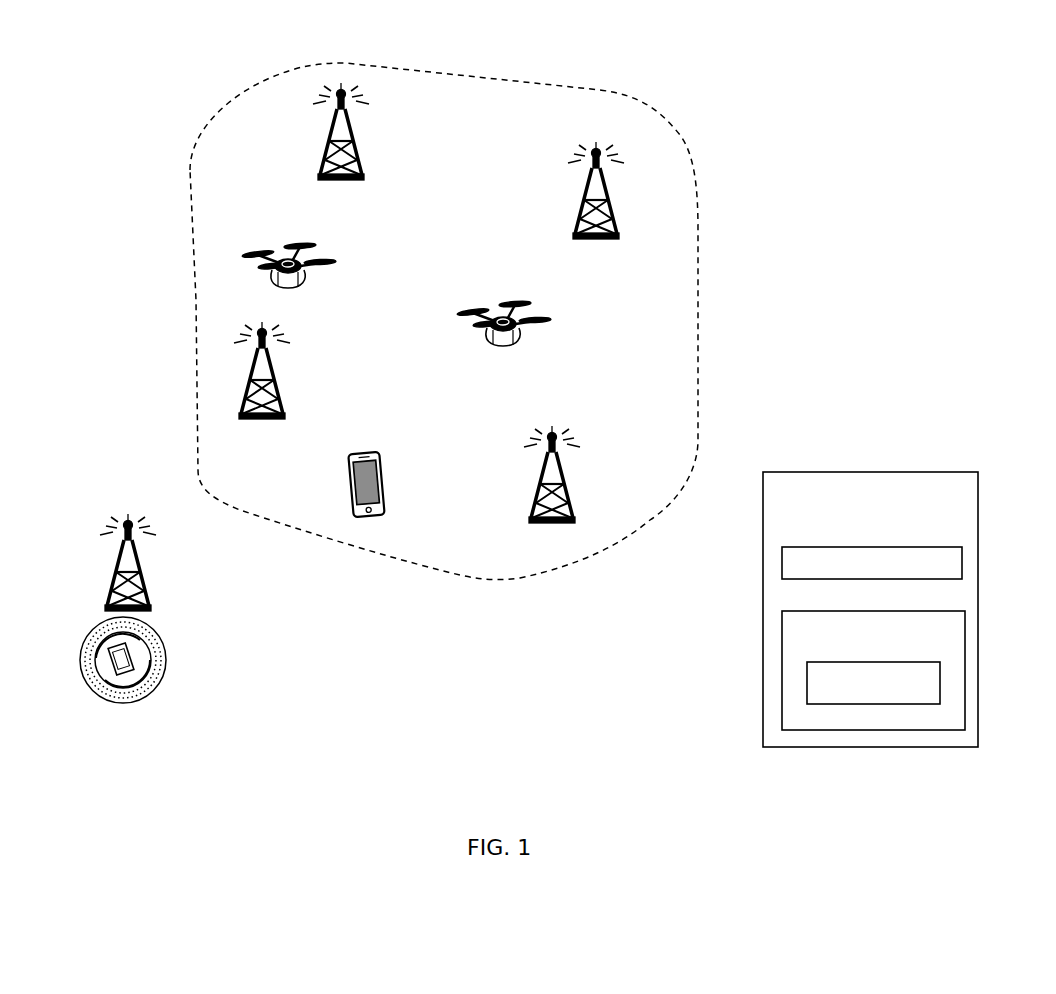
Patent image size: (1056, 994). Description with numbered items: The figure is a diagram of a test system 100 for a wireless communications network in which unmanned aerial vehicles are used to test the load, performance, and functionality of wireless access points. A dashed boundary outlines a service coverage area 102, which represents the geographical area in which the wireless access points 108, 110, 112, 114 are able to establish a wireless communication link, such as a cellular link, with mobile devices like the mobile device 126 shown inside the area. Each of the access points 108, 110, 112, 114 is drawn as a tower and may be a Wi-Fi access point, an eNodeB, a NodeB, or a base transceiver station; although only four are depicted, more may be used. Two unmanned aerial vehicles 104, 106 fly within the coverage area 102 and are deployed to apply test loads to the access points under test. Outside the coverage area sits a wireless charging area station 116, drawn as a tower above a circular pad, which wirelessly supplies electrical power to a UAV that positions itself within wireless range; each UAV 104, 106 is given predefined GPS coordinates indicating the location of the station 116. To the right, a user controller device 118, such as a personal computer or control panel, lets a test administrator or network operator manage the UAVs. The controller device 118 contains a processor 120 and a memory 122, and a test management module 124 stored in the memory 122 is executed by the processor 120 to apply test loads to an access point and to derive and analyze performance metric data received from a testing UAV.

The test system 100 is at (942, 78).
The service coverage area 102 is at (652, 118).
The unmanned aerial vehicle 104 is at (262, 254).
The unmanned aerial vehicle 106 is at (487, 331).
The wireless access point 108 is at (352, 148).
The wireless access point 110 is at (582, 216).
The wireless access point 112 is at (275, 402).
The wireless access point 114 is at (542, 500).
The wireless charging area station 116 is at (165, 646).
The user controller device 118 is at (841, 472).
The processor 120 is at (962, 562).
The memory 122 is at (862, 650).
The test management module 124 is at (940, 685).
The mobile device 126 is at (352, 486).